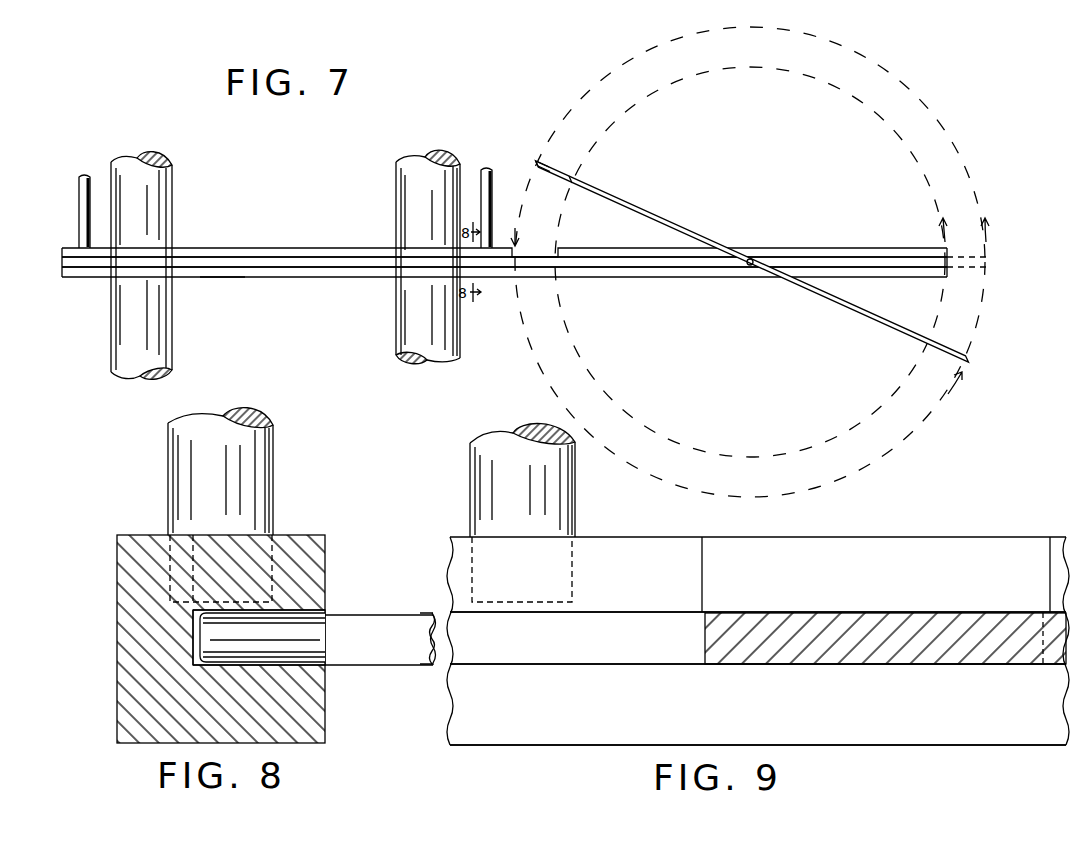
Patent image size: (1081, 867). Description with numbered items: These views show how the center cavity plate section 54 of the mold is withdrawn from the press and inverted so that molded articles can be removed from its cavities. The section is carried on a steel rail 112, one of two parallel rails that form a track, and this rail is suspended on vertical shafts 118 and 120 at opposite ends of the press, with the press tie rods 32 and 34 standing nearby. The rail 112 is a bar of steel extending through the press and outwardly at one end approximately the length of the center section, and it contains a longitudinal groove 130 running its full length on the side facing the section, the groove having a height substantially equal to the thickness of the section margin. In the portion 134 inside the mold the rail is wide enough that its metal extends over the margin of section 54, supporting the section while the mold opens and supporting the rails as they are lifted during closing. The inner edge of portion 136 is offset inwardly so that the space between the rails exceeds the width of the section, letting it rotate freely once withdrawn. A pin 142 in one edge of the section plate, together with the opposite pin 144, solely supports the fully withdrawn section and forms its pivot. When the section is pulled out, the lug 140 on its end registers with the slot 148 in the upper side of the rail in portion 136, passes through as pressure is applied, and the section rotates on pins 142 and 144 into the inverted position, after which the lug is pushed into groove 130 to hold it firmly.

In FIG. 7, the tie rod 32 is at (398, 180).
In FIG. 7, the tie rod 34 is at (173, 186).
In FIG. 7, the center cavity plate section 54 is at (645, 213).
In FIG. 8, the center cavity plate section 54 is at (362, 658).
In FIG. 9, the center cavity plate section 54 is at (1050, 665).
In FIG. 7, the rail 112 is at (526, 258).
In FIG. 8, the rail 112 is at (130, 530).
In FIG. 9, the rail 112 is at (758, 631).
In FIG. 7, the vertical shaft 118 is at (493, 157).
In FIG. 8, the vertical shaft 118 is at (273, 448).
In FIG. 9, the vertical shaft 118 is at (482, 480).
In FIG. 7, the vertical shaft 120 is at (79, 200).
In FIG. 7, the longitudinal groove 130 is at (306, 263).
In FIG. 9, the longitudinal groove 130 is at (532, 658).
In FIG. 7, the rail portion in the mold 134 is at (222, 272).
In FIG. 7, the offset rail portion 136 is at (608, 273).
In FIG. 9, the offset rail portion 136 is at (905, 735).
In FIG. 7, the lug 140 is at (544, 163).
In FIG. 8, the pin 142 is at (315, 625).
In FIG. 7, the pin 144 is at (750, 266).
In FIG. 7, the slot 148 is at (557, 248).
In FIG. 9, the slot 148 is at (937, 552).